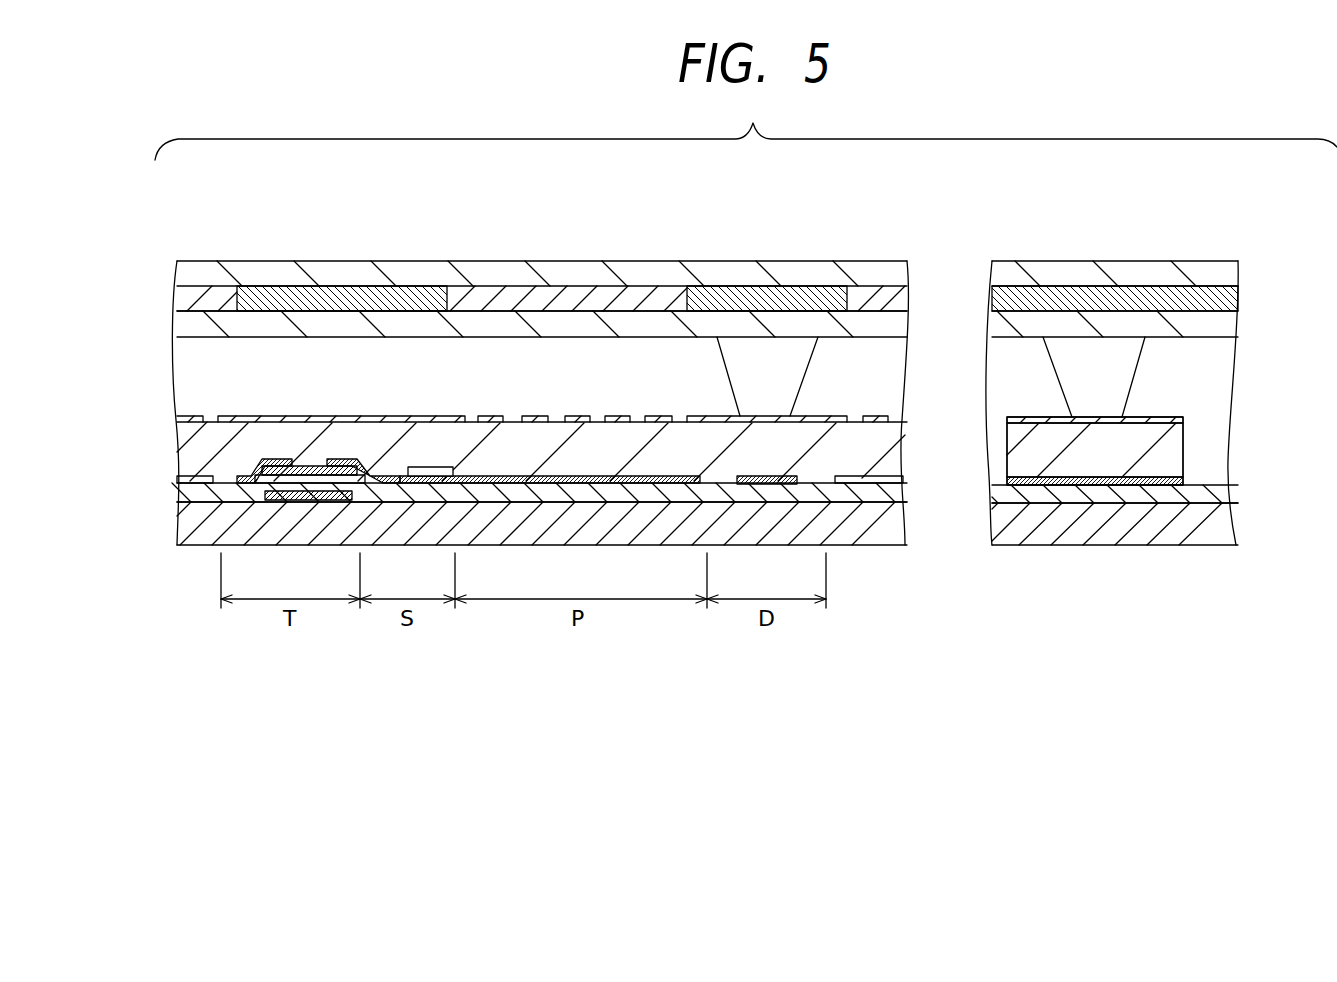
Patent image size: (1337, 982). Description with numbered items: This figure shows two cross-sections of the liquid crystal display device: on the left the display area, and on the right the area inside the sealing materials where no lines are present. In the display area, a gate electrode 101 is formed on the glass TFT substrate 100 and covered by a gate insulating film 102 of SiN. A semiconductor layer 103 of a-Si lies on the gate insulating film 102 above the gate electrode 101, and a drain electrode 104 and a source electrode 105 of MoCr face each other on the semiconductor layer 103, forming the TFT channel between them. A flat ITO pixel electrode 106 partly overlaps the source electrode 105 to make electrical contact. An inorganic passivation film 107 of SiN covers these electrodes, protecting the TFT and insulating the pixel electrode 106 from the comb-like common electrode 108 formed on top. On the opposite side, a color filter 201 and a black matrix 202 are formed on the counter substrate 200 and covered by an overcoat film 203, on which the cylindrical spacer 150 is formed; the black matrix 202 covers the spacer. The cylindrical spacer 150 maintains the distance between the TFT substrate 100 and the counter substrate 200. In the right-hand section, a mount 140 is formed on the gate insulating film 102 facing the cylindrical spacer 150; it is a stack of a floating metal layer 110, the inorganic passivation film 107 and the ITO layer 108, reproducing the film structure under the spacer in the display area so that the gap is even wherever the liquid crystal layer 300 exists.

The TFT substrate 100 is at (898, 525).
The gate electrode 101 is at (306, 498).
The gate insulating film 102 is at (898, 495).
The semiconductor layer 103 is at (310, 480).
The drain electrode 104 is at (266, 462).
The source electrode 105 is at (373, 480).
The pixel electrode 106 is at (563, 483).
The inorganic passivation film 107 is at (900, 447).
The common electrode 108 is at (880, 408).
The metal layer 110 is at (1183, 480).
The mount 140 is at (1278, 390).
The cylindrical spacer 150 is at (783, 365).
The counter substrate 200 is at (898, 273).
The color filter 201 is at (634, 296).
The black matrix 202 is at (719, 294).
The overcoat film 203 is at (898, 323).
The liquid crystal layer 300 is at (541, 367).